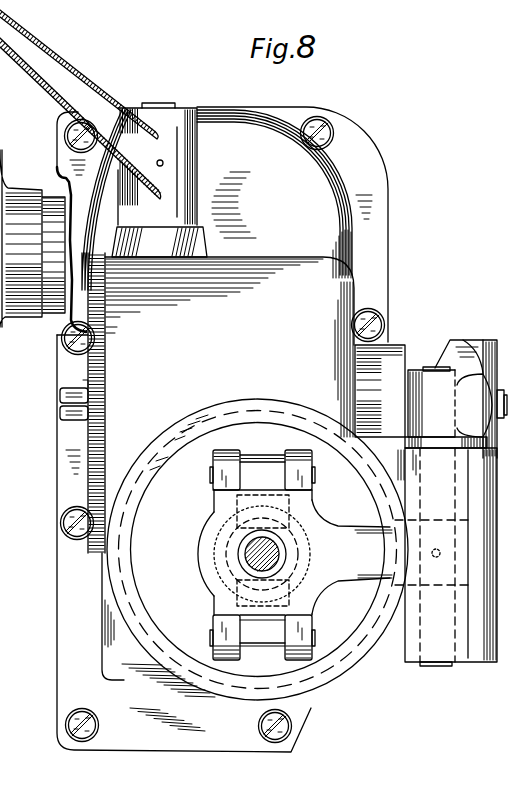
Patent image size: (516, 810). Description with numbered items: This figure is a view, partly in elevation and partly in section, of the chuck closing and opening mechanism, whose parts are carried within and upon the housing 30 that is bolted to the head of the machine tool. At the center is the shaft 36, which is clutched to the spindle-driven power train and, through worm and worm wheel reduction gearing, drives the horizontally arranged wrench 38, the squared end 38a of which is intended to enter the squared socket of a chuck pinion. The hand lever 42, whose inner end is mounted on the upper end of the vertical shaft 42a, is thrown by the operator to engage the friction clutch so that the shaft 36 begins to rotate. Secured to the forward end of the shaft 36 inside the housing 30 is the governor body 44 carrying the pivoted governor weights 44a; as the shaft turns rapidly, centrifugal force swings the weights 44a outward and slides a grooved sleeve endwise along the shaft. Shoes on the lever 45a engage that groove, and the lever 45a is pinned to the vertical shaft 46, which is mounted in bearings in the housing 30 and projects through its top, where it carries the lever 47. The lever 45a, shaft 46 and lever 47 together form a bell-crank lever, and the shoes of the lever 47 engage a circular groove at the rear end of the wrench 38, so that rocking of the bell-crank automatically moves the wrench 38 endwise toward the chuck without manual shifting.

The housing 30 is at (362, 177).
The shaft 36 is at (250, 568).
The wrench 38 is at (497, 405).
The squared end 38a is at (62, 397).
The hand lever 42 is at (64, 70).
The vertical shaft 42a is at (162, 103).
The governor body 44 is at (203, 557).
The governor weights 44a is at (258, 458).
The lever 45a is at (353, 528).
The vertical shaft 46 is at (432, 368).
The lever 47 is at (464, 340).